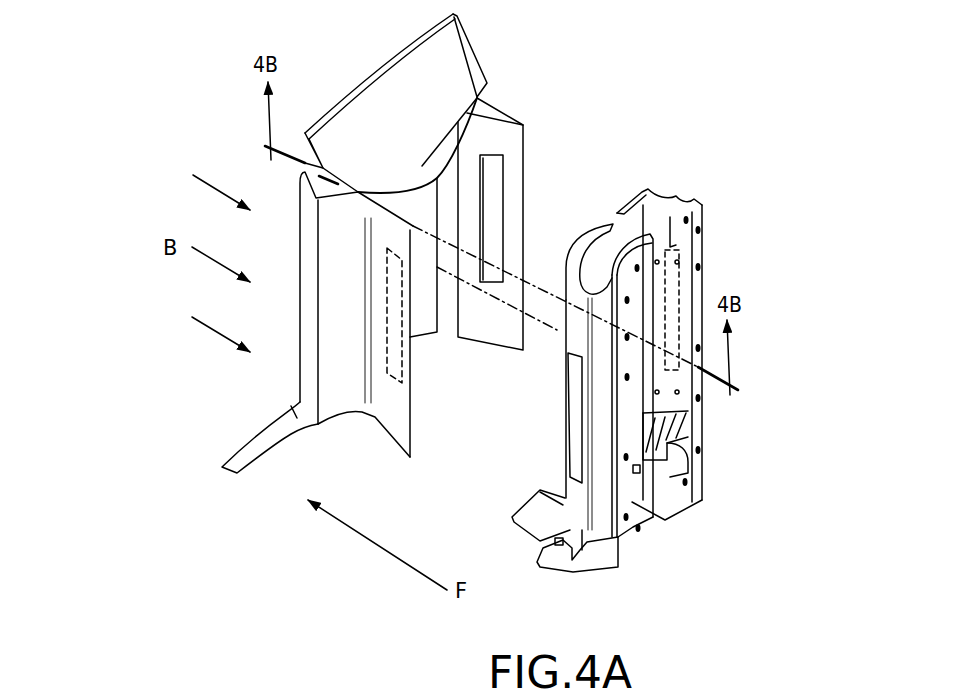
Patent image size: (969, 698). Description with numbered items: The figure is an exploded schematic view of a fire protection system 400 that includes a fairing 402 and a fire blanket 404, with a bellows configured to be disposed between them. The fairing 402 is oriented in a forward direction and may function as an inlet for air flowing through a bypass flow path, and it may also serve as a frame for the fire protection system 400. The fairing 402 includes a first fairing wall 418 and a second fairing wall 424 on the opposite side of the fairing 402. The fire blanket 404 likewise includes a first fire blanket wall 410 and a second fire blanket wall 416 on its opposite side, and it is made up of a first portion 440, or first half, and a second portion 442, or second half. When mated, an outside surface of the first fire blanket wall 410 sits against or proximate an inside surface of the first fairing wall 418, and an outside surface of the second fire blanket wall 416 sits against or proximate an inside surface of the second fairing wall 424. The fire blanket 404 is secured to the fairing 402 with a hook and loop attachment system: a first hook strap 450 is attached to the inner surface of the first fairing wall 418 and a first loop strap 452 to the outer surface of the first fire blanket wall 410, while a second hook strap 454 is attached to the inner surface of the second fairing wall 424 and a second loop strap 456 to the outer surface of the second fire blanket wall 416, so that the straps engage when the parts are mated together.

The fire protection system 400 is at (204, 100).
The fairing 402 is at (455, 88).
The fire blanket 404 is at (703, 208).
The first fire blanket wall 410 is at (577, 337).
The second fire blanket wall 416 is at (673, 403).
The first fairing wall 418 is at (393, 413).
The second fairing wall 424 is at (507, 143).
The first portion 440 is at (627, 545).
The second portion 442 is at (693, 482).
The first hook strap 450 is at (393, 360).
The first loop strap 452 is at (575, 445).
The second hook strap 454 is at (500, 202).
The second loop strap 456 is at (690, 285).